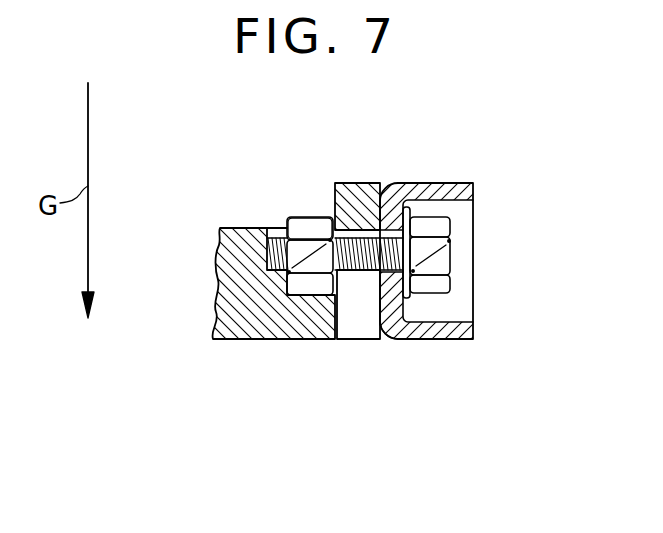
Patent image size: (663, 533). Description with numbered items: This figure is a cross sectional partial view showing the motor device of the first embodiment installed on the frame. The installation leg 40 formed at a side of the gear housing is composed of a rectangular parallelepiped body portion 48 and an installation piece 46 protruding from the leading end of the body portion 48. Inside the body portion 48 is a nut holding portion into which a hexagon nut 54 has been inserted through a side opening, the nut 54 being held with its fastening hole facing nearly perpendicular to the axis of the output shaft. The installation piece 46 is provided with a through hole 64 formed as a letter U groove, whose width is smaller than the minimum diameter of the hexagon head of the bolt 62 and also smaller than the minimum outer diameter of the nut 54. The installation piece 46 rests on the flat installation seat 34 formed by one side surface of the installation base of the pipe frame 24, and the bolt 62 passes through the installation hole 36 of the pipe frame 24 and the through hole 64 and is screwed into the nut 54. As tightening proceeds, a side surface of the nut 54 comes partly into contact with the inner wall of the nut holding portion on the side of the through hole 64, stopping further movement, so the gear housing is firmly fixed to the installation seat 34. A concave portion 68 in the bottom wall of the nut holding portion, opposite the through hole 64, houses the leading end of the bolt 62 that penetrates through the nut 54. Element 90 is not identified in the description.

The pipe frame 24 is at (457, 178).
The flat installation seat 34 is at (395, 317).
The installation hole 36 is at (432, 256).
The installation leg 40 is at (260, 418).
The installation piece 46 is at (358, 196).
The body portion 48 is at (305, 330).
The hexagon nut 54 is at (308, 222).
The bolt 62 is at (450, 268).
The through hole 64 is at (360, 322).
The concave portion 68 is at (280, 226).
The washer 90 is at (410, 300).